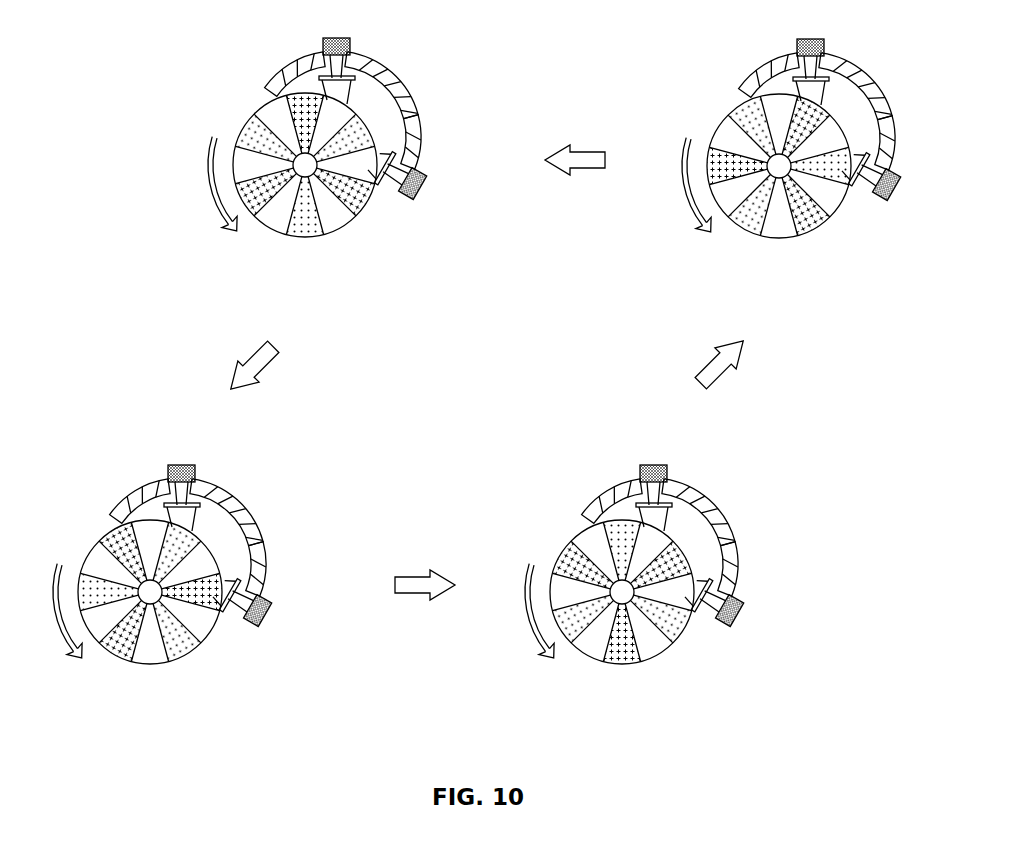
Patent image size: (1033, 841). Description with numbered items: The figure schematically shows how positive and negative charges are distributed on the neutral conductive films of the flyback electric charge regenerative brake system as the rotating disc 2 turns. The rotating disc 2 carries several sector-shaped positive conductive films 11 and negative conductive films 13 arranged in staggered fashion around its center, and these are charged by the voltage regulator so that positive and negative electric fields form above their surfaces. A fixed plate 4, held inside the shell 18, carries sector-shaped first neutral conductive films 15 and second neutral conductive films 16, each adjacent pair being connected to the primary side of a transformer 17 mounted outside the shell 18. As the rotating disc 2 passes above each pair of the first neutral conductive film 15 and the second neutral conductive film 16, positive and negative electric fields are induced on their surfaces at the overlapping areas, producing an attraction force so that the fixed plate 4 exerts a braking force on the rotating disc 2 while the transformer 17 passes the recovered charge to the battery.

The rotating disc 2 is at (236, 130).
The fixed plate 4 is at (386, 95).
The positive conductive film 11 is at (297, 107).
The negative conductive film 13 is at (251, 127).
The first neutral conductive film 15 is at (310, 84).
The second neutral conductive film 16 is at (363, 86).
The transformer 17 is at (339, 39).
The shell 18 is at (418, 148).